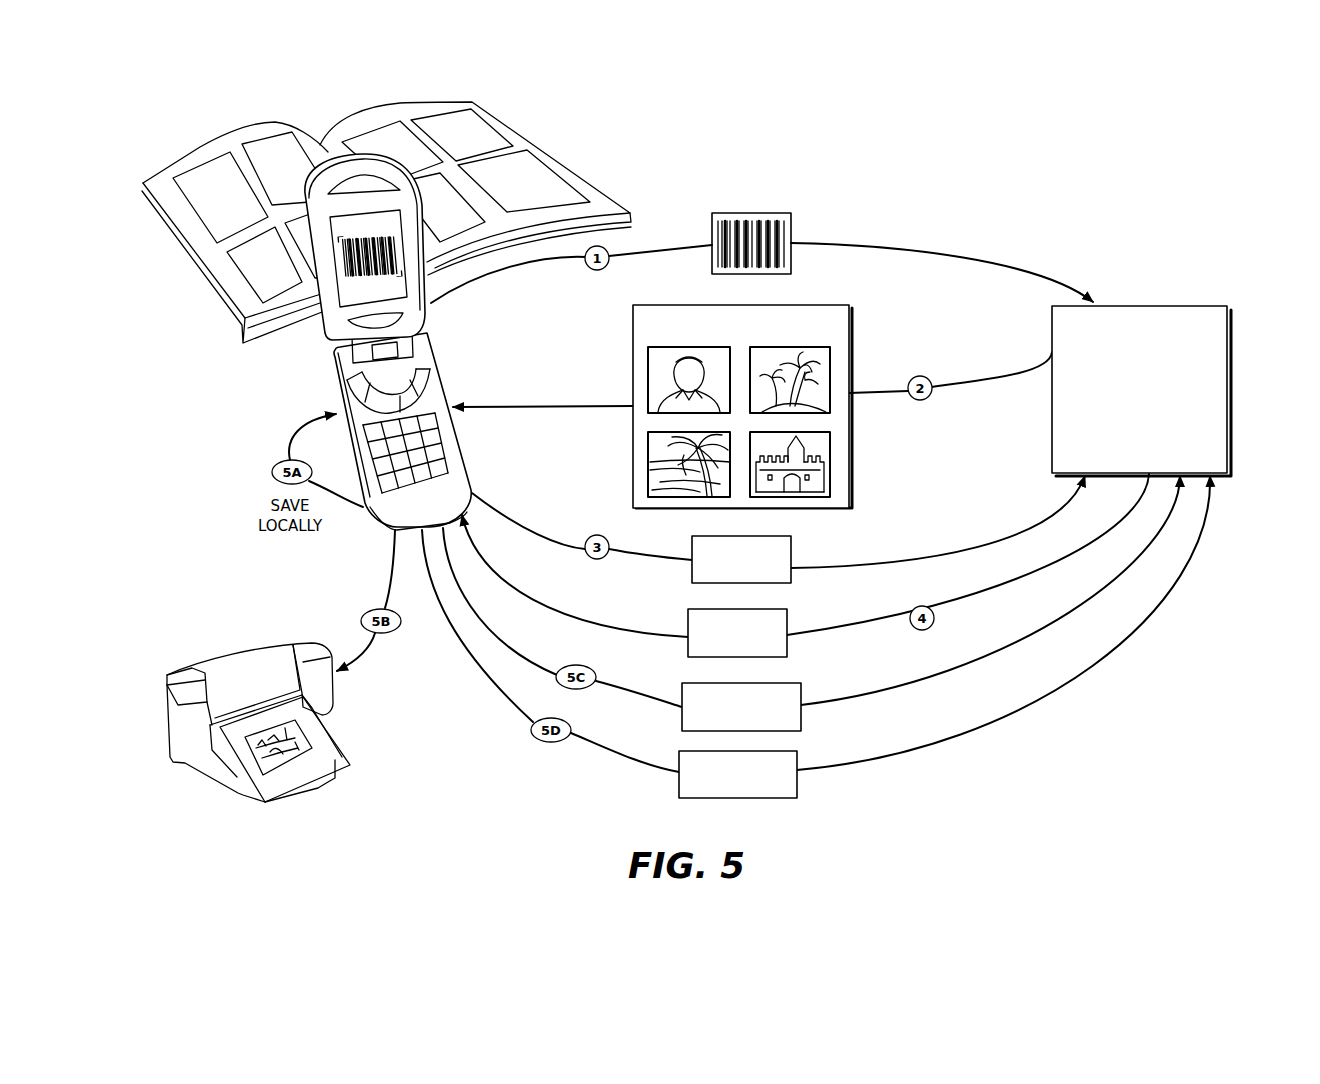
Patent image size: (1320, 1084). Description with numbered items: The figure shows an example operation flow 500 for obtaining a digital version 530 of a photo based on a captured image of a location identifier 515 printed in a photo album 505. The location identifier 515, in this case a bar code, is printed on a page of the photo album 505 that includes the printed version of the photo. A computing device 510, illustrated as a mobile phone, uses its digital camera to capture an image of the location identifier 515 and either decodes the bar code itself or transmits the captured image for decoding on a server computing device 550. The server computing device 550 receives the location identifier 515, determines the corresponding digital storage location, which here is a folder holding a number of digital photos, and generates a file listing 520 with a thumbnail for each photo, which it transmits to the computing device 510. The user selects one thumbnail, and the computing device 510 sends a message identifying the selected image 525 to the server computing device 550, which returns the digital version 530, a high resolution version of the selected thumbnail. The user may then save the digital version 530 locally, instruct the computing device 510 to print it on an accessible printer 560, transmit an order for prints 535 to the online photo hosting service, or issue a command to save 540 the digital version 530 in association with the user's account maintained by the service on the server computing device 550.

The operation flow 500 is at (192, 121).
The photo album 505 is at (407, 103).
The computing device 510 is at (335, 402).
The location identifier 515 is at (712, 226).
The file listing 520 is at (633, 358).
The selected image 525 is at (692, 546).
The digital version 530 is at (688, 621).
The order for prints 535 is at (682, 693).
The command to save 540 is at (679, 762).
The server computing device 550 is at (1232, 329).
The printer 560 is at (258, 648).